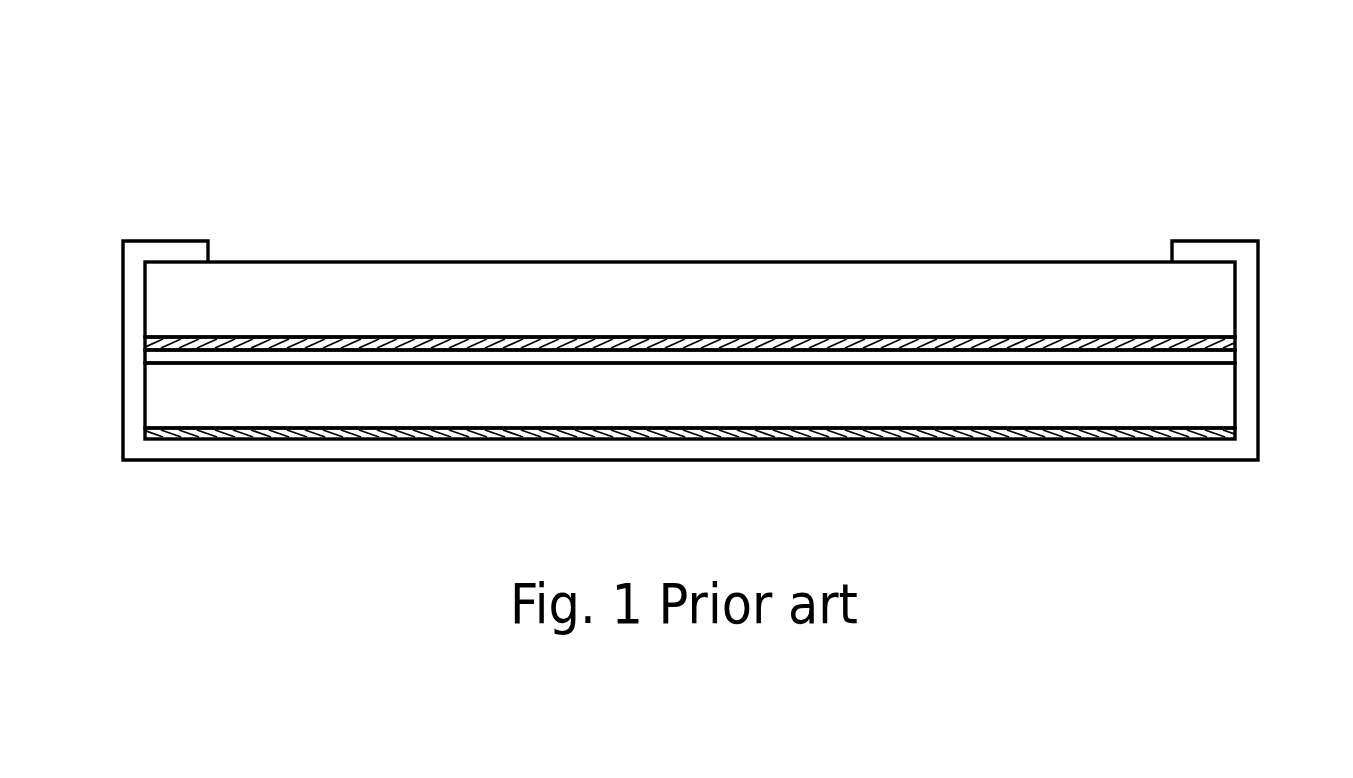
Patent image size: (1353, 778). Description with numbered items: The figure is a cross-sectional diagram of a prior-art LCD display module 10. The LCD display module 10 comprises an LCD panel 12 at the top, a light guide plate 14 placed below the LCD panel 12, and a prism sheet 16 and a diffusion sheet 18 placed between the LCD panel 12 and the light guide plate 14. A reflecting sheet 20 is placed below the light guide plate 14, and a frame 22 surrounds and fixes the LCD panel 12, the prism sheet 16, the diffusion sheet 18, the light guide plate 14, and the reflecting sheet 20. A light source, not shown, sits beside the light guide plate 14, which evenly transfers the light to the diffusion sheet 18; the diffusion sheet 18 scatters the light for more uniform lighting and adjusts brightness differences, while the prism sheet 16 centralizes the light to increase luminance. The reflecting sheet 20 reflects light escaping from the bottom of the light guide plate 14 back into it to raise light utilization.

The LCD display module 10 is at (1188, 96).
The LCD panel 12 is at (717, 322).
The light guide plate 14 is at (717, 410).
The prism sheet 16 is at (1230, 343).
The diffusion sheet 18 is at (1205, 360).
The reflecting sheet 20 is at (1220, 432).
The frame 22 is at (128, 303).